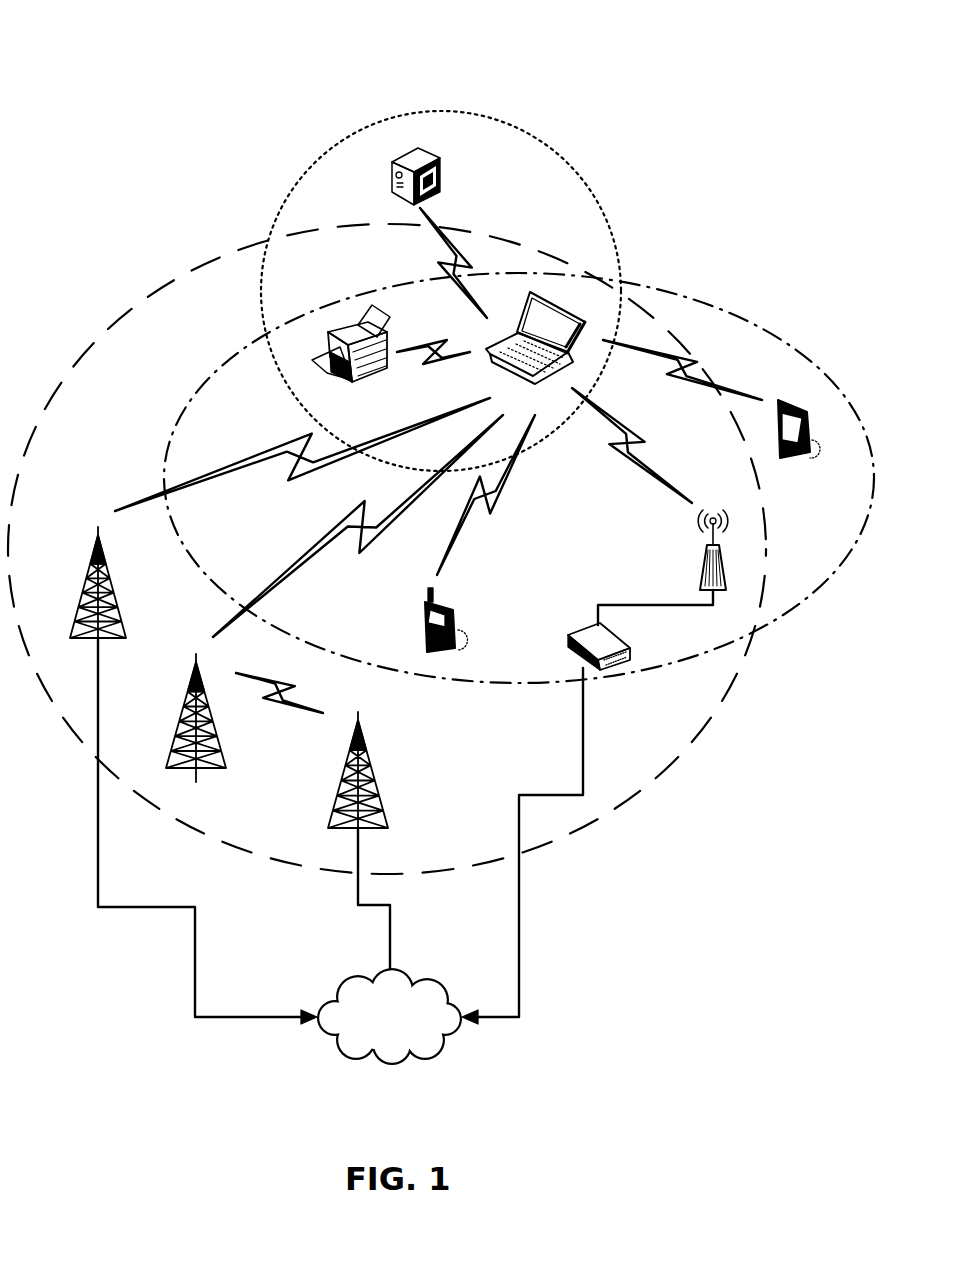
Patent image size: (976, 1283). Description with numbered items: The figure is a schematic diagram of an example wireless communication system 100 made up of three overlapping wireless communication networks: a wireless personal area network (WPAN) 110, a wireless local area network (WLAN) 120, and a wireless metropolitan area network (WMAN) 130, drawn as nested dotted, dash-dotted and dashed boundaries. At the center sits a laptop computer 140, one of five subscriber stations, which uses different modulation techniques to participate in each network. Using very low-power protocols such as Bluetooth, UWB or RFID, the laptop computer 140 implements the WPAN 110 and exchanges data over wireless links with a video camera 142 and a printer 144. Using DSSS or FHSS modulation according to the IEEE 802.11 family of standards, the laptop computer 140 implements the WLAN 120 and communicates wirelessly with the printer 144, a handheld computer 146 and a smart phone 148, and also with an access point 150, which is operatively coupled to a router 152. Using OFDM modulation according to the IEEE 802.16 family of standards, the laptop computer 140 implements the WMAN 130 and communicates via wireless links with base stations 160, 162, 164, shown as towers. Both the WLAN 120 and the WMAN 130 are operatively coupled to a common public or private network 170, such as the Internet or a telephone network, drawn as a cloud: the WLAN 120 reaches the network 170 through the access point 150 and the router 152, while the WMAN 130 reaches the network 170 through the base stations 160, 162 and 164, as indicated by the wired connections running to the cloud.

The wireless communication system 100 is at (95, 42).
The wireless personal area network (WPAN) 110 is at (437, 110).
The wireless local area network (WLAN) 120 is at (156, 462).
The wireless metropolitan area network (WMAN) 130 is at (193, 268).
The laptop computer 140 is at (537, 291).
The video camera 142 is at (435, 175).
The printer 144 is at (360, 383).
The handheld computer 146 is at (795, 398).
The smart phone 148 is at (446, 606).
The access point (AP) 150 is at (705, 570).
The router 152 is at (578, 628).
The base station 160 is at (90, 572).
The base station 162 is at (188, 703).
The base station 164 is at (352, 770).
The common public or private network 170 is at (344, 987).